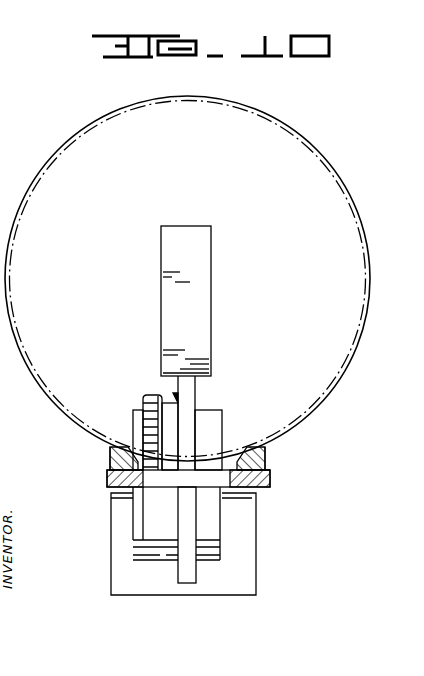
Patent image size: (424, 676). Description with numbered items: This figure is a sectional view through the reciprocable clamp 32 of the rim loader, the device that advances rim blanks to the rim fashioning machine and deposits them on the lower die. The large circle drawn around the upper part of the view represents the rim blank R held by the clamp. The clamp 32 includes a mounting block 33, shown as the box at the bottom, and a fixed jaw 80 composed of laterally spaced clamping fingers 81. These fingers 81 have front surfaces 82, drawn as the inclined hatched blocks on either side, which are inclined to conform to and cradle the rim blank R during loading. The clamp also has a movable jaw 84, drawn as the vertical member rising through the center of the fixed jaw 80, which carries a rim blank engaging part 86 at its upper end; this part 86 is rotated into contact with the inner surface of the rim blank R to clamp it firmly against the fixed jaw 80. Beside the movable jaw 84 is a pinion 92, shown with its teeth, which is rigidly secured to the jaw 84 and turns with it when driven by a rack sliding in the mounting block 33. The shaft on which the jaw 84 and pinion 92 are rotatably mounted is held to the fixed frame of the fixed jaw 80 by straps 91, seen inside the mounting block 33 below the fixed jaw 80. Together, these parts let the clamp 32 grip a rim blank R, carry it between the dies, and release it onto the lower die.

The rim blank R is at (322, 158).
The rim blank engaging part 86 is at (205, 322).
The movable jaw 84 is at (213, 373).
The pinion 92 is at (152, 394).
The front surfaces 82 is at (119, 447).
The clamping fingers 81 is at (110, 455).
The fixed jaw 80 is at (108, 478).
The clamp 32 is at (279, 464).
The mounting block 33 is at (247, 537).
The straps 91 is at (140, 517).